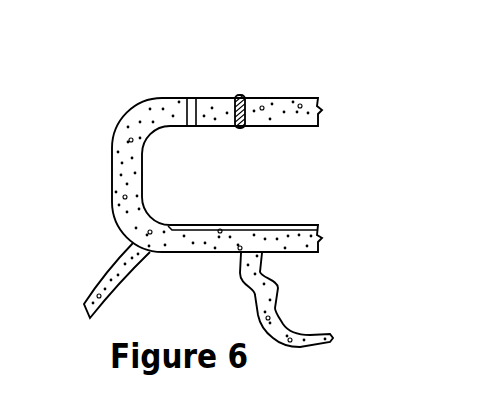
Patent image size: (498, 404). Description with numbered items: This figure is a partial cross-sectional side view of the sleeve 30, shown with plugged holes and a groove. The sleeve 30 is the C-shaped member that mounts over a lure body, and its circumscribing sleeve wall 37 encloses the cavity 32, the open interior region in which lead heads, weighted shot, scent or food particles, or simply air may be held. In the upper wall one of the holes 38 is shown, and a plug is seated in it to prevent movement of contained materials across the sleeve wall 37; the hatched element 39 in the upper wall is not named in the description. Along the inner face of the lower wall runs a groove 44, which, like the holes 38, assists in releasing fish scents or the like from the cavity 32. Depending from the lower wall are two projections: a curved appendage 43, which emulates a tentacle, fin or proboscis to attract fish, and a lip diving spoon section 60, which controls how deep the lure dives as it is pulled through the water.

The sleeve 30 is at (210, 173).
The cavity 32 is at (223, 185).
The sleeve wall 37 is at (130, 117).
The holes 38 is at (191, 97).
The hatched insert 39 is at (238, 96).
The appendages 43 is at (284, 321).
The grooves 44 is at (245, 225).
The lip diving spoon section 60 is at (112, 273).